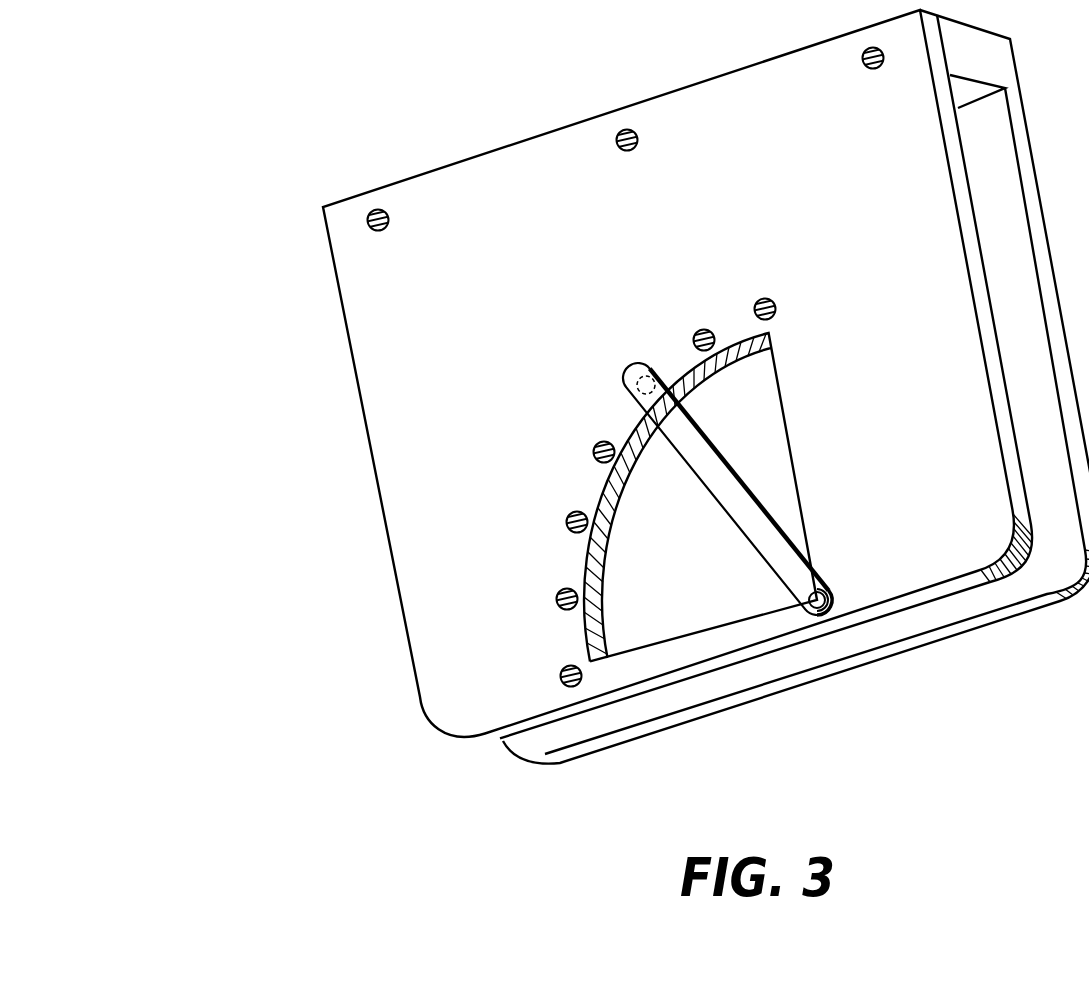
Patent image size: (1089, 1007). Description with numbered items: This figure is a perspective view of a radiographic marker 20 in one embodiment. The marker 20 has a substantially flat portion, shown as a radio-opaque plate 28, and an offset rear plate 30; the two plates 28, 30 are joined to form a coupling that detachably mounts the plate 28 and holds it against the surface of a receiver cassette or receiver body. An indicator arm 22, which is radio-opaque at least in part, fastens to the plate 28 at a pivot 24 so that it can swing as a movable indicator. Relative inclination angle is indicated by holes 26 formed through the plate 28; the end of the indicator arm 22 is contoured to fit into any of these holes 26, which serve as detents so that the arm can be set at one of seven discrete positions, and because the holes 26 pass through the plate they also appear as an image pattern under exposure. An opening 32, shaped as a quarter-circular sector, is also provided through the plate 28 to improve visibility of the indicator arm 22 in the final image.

The marker 20 is at (233, 210).
The indicator arm 22 is at (835, 577).
The pivot 24 is at (815, 612).
The holes 26 is at (556, 600).
The radio-opaque plate 28 is at (367, 432).
The rear plate 30 is at (786, 693).
The opening 32 is at (656, 591).